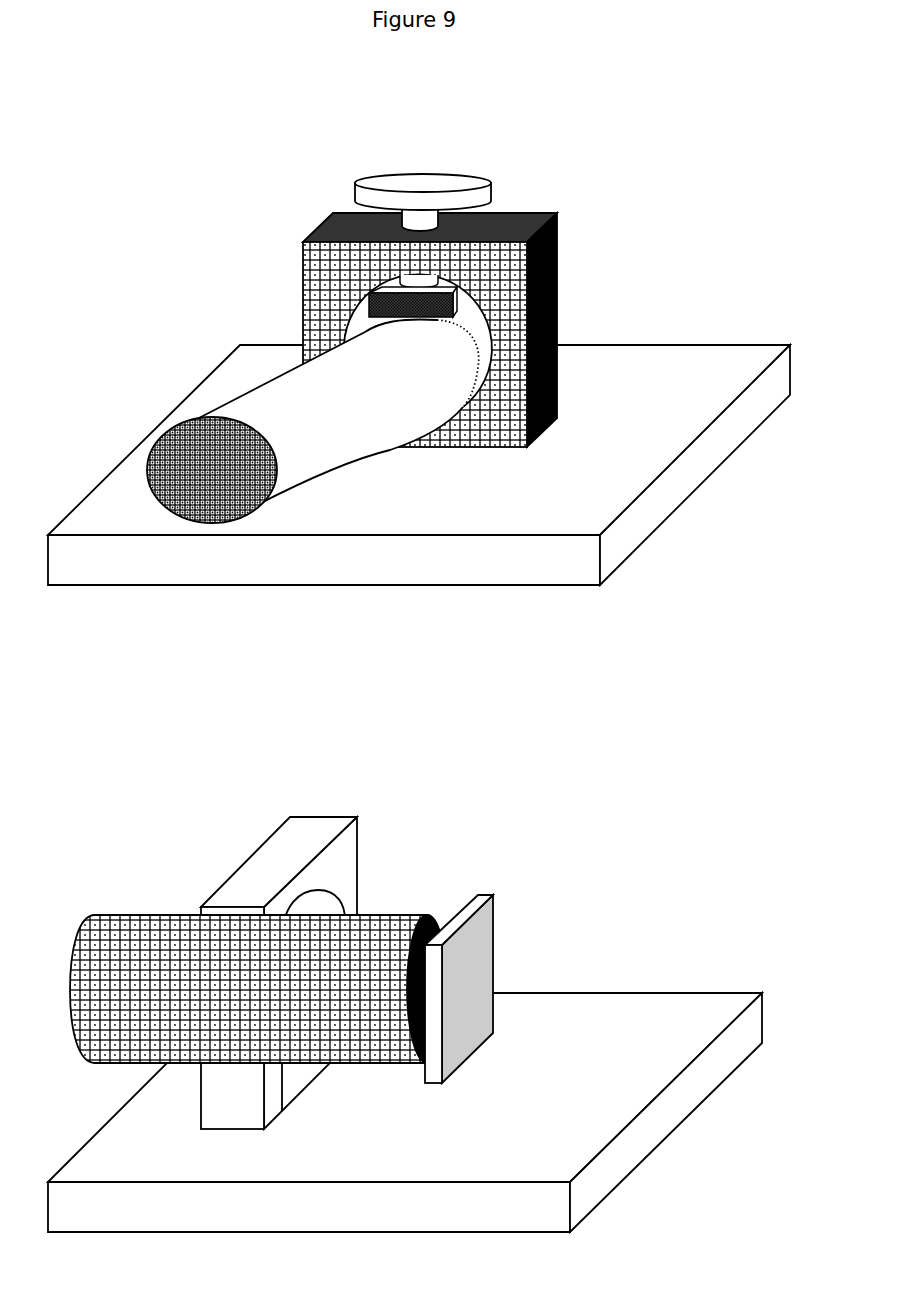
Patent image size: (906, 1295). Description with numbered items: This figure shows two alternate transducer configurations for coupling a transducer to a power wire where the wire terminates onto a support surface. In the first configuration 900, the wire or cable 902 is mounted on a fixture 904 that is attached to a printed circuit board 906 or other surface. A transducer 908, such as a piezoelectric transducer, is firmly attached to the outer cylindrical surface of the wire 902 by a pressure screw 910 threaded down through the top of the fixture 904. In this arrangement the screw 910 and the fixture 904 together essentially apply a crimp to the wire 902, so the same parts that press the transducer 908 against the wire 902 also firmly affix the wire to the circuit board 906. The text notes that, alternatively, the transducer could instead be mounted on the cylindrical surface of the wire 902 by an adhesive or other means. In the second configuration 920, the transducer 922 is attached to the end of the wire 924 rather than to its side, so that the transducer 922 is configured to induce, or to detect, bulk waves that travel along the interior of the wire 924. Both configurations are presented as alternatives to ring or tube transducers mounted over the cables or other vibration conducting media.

The transducer configuration 900 is at (663, 117).
The wire 902 is at (202, 402).
The fixture 904 is at (567, 286).
The printed circuit board 906 is at (685, 477).
The transducer 908 is at (390, 292).
The pressure screw 910 is at (428, 155).
The transducer configuration 920 is at (627, 758).
The transducer 922 is at (508, 953).
The wire 924 is at (148, 907).